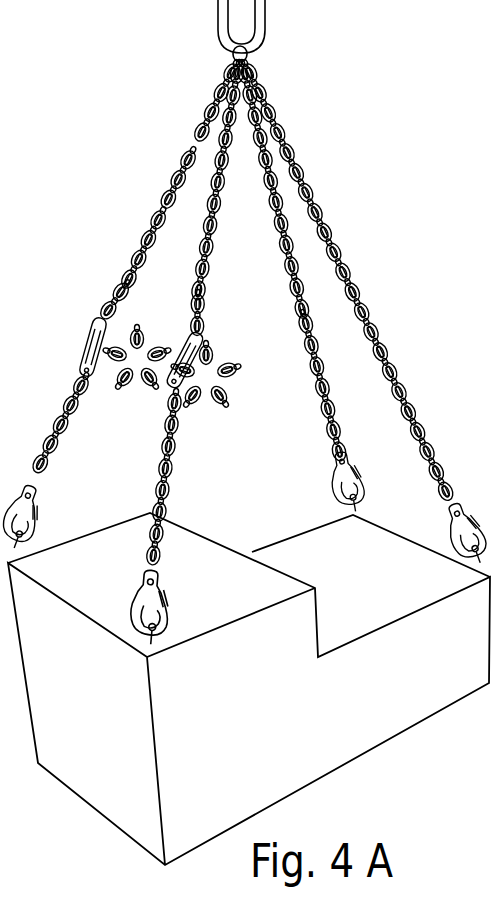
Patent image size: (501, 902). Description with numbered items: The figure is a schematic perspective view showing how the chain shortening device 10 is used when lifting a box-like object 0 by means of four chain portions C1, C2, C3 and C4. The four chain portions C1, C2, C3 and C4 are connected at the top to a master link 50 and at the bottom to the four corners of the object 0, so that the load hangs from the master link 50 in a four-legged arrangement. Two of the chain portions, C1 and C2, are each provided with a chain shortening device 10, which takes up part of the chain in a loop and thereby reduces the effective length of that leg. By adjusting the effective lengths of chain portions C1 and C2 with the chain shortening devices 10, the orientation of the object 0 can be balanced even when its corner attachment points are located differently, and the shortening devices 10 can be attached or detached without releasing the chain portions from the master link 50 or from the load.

The master link 50 is at (262, 22).
The chain portion C1 is at (160, 210).
The chain portion C2 is at (212, 284).
The chain portion C3 is at (317, 380).
The chain portion C4 is at (390, 353).
The chain shortening device 10 is at (93, 333).
The box-like object 0 is at (93, 778).